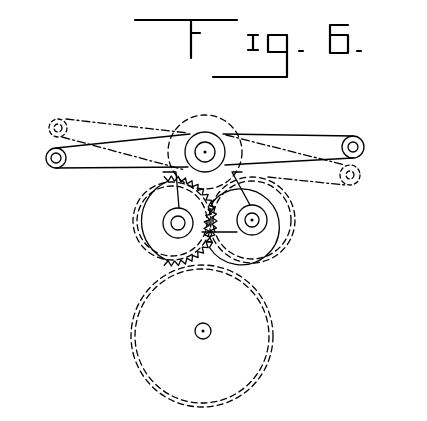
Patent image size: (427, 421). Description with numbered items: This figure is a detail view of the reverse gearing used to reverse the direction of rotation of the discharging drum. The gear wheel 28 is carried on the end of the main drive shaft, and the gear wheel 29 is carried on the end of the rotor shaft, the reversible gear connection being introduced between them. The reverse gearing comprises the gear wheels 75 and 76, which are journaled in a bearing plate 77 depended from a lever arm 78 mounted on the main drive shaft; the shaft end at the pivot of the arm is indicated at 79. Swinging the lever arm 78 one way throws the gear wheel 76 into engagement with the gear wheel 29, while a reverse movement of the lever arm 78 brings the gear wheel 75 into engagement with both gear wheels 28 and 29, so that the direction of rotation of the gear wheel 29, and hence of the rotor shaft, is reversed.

The gear wheel 28 is at (204, 113).
The gear wheel 29 is at (275, 322).
The gear wheel 75 is at (142, 226).
The gear wheel 76 is at (267, 234).
The bearing plate 77 is at (240, 172).
The lever arm 78 is at (90, 160).
The shaft 79 is at (210, 147).